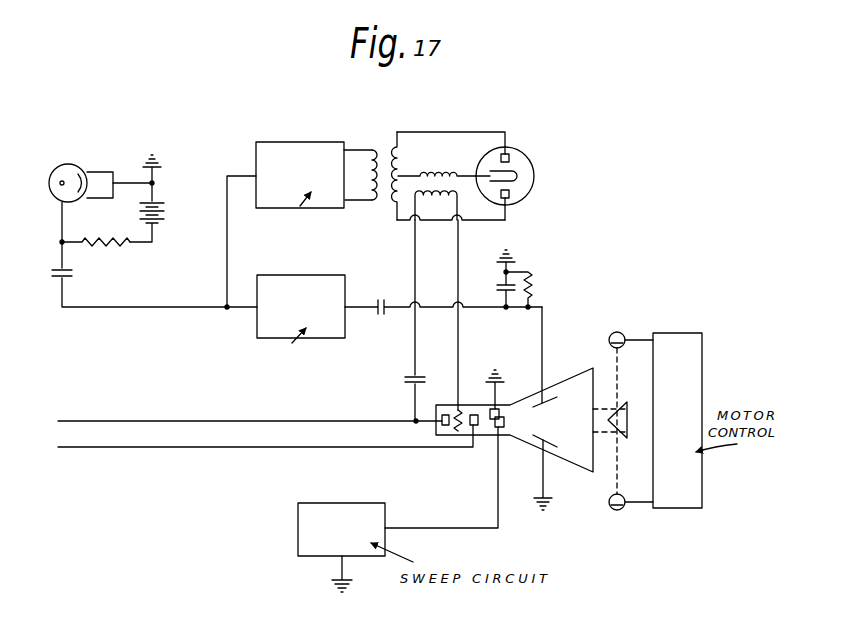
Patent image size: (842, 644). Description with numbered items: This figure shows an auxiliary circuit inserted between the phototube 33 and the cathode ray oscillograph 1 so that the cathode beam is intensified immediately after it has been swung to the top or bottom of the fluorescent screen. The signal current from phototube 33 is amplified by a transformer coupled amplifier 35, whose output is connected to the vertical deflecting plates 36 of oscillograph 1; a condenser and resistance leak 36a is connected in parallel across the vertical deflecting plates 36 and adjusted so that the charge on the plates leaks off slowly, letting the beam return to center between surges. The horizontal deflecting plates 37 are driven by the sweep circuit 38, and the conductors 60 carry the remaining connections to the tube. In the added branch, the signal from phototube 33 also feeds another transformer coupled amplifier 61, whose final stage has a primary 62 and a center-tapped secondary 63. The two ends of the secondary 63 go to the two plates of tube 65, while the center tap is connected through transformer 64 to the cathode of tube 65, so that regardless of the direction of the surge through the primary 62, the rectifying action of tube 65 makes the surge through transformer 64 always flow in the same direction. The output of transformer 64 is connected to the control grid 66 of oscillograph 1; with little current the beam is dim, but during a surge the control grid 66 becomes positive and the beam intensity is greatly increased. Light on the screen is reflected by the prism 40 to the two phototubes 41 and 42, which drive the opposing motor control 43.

The phototube 33 is at (71, 163).
The transformer coupled amplifier 61 is at (294, 141).
The primary of the transformer 62 is at (371, 148).
The secondary of the transformer 63 is at (398, 158).
The transformer 64 is at (433, 173).
The tube 65 is at (533, 185).
The transformer coupled amplifier 35 is at (301, 273).
The condenser and resistance leak 36a is at (538, 272).
The conductors 60 is at (324, 420).
The cathode ray oscillograph 1 is at (586, 468).
The control grid 66 is at (462, 410).
The horizontal deflecting plates 37 is at (498, 431).
The vertical deflecting plates 36 is at (560, 412).
The phototube 41 is at (617, 332).
The phototube 42 is at (617, 510).
The opposing motor control 43 is at (677, 420).
The reflecting prism 40 is at (624, 428).
The sweep circuit 38 is at (298, 535).